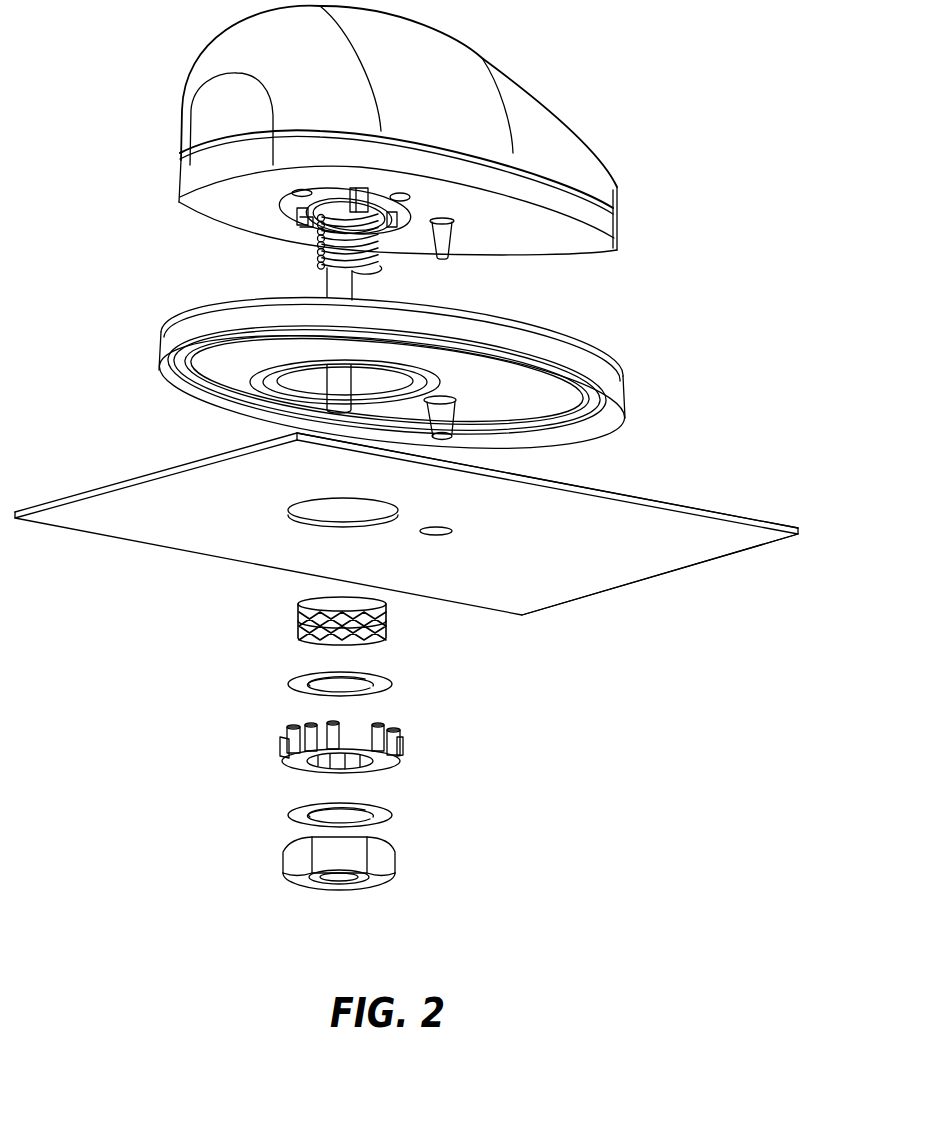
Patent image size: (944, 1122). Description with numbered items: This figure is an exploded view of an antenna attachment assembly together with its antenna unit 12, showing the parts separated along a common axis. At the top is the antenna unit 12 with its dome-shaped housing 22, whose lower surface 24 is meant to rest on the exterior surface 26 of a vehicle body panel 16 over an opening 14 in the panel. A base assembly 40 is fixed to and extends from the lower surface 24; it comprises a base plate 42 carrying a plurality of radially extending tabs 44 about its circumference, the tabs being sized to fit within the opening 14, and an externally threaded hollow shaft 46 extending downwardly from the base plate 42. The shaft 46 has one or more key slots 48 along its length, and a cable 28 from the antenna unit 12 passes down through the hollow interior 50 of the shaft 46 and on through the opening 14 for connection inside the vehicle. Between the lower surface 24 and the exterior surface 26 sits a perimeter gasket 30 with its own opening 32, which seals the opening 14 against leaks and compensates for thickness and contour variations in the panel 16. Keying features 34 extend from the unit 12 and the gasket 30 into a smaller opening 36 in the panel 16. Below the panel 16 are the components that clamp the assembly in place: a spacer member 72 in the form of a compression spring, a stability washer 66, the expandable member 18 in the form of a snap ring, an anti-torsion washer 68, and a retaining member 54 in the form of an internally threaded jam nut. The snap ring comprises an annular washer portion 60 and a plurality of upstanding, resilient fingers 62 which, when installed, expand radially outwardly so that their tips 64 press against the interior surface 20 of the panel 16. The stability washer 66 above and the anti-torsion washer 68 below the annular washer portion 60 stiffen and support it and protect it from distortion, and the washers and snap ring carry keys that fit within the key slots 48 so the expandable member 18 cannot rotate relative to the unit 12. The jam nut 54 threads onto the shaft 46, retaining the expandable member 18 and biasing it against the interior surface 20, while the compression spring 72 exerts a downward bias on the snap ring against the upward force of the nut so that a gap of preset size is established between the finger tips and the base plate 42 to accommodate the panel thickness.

The antenna unit 12 is at (572, 148).
The opening 14 is at (322, 513).
The panel 16 is at (685, 545).
The expandable member 18 is at (398, 758).
The interior surface 20 is at (607, 567).
The dome lens 22 is at (527, 102).
The lower surface 24 is at (587, 243).
The exterior surface 26 is at (685, 502).
The cable 28 is at (330, 283).
The perimeter gasket 30 is at (603, 383).
The opening 32 is at (298, 393).
The keying features 34 is at (453, 240).
The smaller opening 36 is at (434, 537).
The base assembly 40 is at (262, 239).
The base plate 42 is at (332, 190).
The radially extending tabs 44 is at (361, 188).
The externally threaded hollow shaft 46 is at (378, 240).
The key slots 48 is at (318, 257).
The hollow interior 50 is at (355, 274).
The retaining member 54 is at (385, 862).
The annular washer portion 60 is at (305, 765).
The fingers 62 is at (310, 724).
The tips 64 is at (333, 721).
The stability washer 66 is at (392, 680).
The anti-torsion washer 68 is at (385, 815).
The spacer member 72 is at (303, 622).